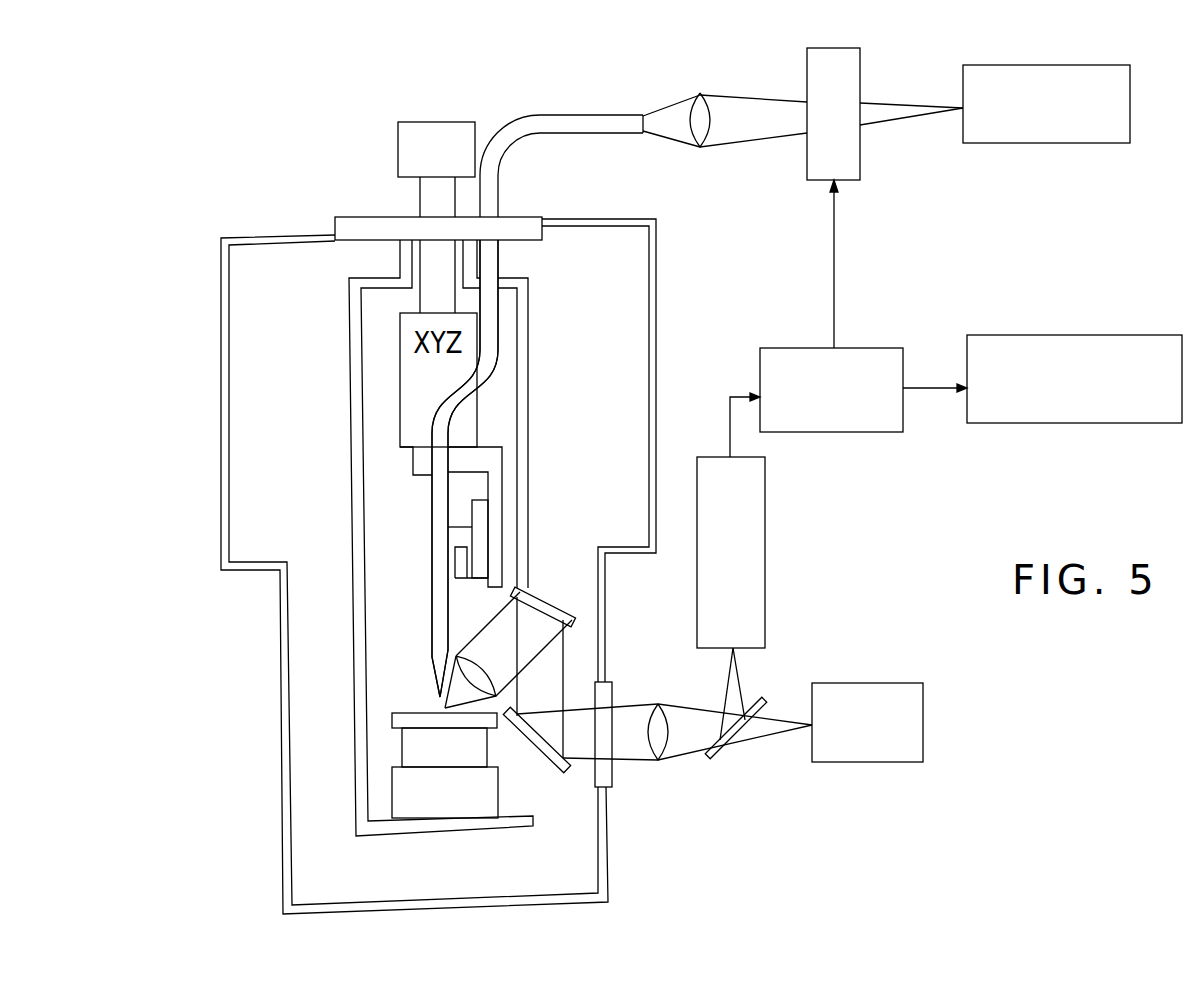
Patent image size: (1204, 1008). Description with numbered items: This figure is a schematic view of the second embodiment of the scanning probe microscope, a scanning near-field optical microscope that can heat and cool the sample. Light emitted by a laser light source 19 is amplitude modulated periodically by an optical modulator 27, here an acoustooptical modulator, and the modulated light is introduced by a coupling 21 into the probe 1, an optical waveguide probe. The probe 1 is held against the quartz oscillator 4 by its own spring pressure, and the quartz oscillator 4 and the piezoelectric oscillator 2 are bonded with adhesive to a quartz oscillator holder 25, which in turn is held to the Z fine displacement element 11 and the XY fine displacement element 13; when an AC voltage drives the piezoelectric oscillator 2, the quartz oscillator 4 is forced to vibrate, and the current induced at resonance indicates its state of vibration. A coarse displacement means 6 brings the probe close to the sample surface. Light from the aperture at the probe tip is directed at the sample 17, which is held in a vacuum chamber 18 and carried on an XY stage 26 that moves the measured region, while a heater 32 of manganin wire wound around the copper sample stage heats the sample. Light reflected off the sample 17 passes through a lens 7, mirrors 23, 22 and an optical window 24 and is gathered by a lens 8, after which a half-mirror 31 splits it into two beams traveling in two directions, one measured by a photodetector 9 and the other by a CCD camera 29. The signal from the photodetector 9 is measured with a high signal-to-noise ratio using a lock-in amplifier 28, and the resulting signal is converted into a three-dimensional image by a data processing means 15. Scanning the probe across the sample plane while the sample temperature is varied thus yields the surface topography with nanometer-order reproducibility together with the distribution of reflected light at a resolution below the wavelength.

The probe 1 is at (518, 117).
The piezoelectric oscillator 2 is at (480, 497).
The quartz oscillator 4 is at (458, 533).
The coarse displacement means 6 is at (398, 152).
The lens 7 is at (467, 658).
The lens 8 is at (660, 705).
The photodetector 9 is at (765, 540).
The Z fine displacement element 11 is at (448, 392).
The XY fine displacement element 13 is at (527, 468).
The data processing means 15 is at (1057, 337).
The sample 17 is at (392, 722).
The vacuum chamber 18 is at (656, 310).
The laser light source 19 is at (1017, 143).
The coupling 21 is at (700, 94).
The mirror 22 is at (560, 770).
The mirror 23 is at (540, 592).
The optical window 24 is at (612, 690).
The quartz oscillator holder 25 is at (503, 458).
The XY stage 26 is at (392, 801).
The optical modulator 27 is at (860, 155).
The lock-in amplifier 28 is at (890, 348).
The CCD camera 29 is at (890, 683).
The half-mirror 31 is at (722, 757).
The heater 32 is at (402, 757).